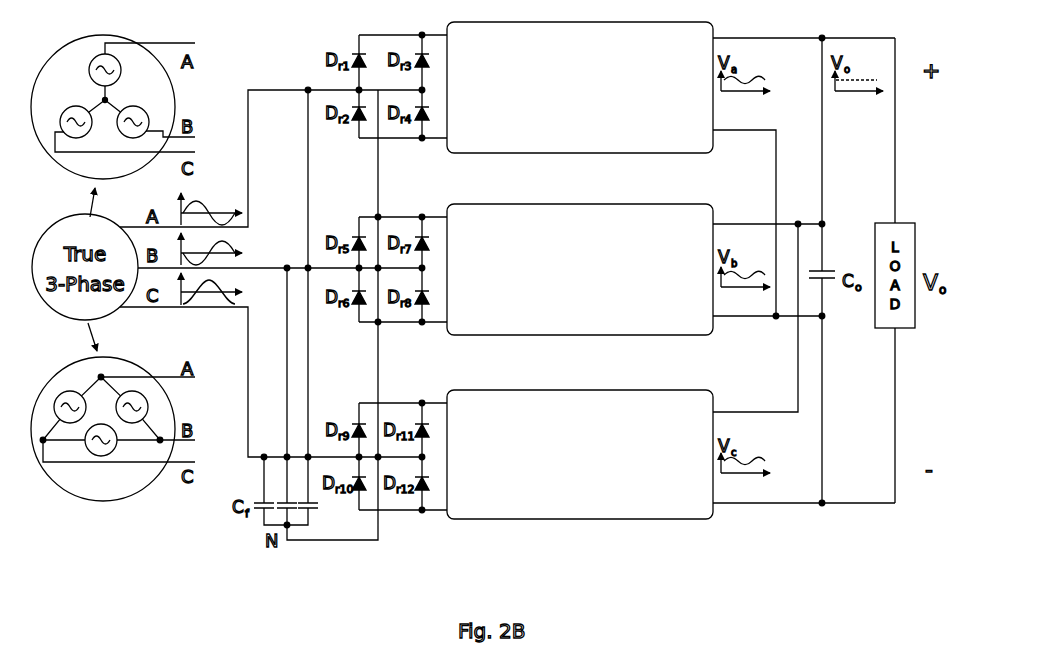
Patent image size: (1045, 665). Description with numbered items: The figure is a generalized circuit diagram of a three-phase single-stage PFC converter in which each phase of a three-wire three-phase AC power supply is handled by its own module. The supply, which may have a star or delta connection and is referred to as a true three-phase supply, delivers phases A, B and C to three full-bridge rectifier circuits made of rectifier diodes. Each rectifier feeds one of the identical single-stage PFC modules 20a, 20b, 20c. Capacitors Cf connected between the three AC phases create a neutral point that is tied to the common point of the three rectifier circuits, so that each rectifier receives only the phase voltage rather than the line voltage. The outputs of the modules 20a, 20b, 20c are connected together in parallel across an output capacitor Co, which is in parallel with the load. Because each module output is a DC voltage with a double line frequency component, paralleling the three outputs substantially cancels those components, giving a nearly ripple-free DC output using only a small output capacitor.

The single-stage PFC module 20a is at (618, 153).
The single-stage PFC module 20b is at (618, 335).
The single-stage PFC module 20c is at (618, 519).